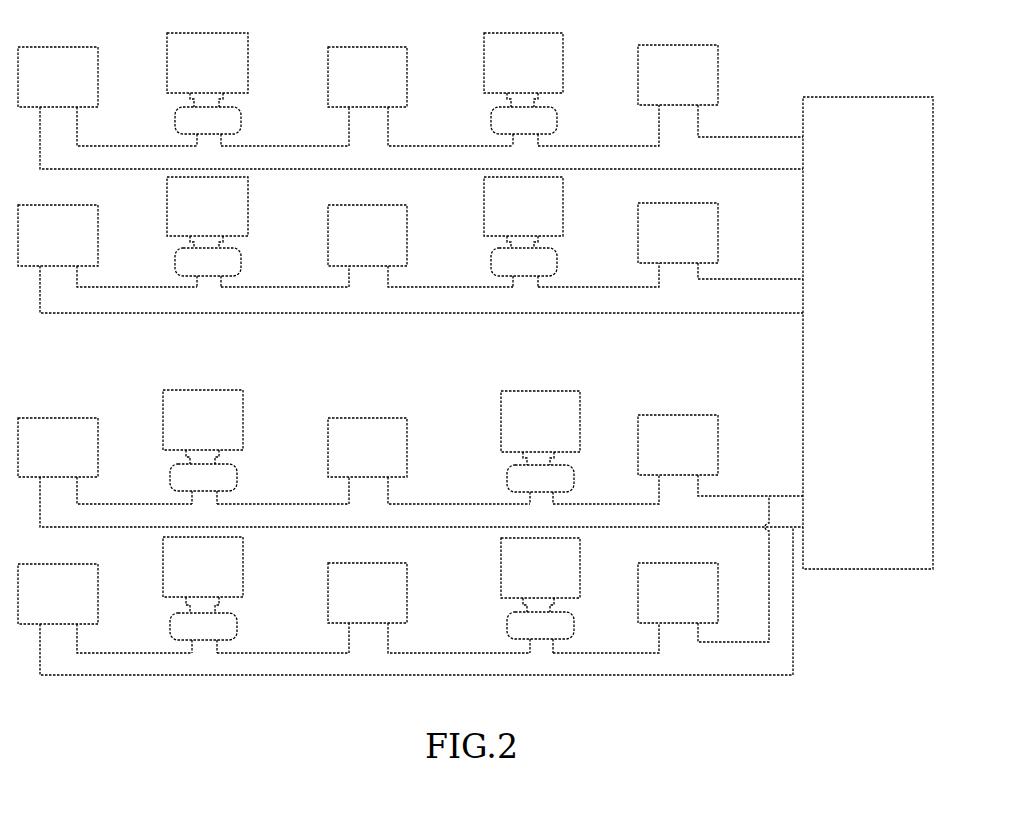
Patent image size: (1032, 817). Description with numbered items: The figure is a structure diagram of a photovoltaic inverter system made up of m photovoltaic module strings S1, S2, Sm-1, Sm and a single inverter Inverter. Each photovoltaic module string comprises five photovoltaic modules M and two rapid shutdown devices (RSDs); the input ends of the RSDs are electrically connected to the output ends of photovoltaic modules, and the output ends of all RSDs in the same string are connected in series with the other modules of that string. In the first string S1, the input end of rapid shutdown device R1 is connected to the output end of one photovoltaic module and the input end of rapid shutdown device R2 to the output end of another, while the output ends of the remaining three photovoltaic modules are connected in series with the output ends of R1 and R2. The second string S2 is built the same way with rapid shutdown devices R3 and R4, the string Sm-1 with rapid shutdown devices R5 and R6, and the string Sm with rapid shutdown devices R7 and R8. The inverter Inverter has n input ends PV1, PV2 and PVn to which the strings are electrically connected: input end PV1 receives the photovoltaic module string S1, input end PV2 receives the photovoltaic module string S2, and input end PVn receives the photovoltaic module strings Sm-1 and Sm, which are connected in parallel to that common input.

The rapid shutdown device R1 is at (208, 119).
The rapid shutdown device R2 is at (524, 119).
The rapid shutdown device R3 is at (208, 261).
The rapid shutdown device R4 is at (524, 261).
The rapid shutdown device R5 is at (203, 477).
The rapid shutdown device R6 is at (540, 478).
The rapid shutdown device R7 is at (203, 625).
The rapid shutdown device R8 is at (540, 625).
The photovoltaic module string S1 is at (410, 101).
The photovoltaic module string S2 is at (410, 245).
The photovoltaic module string Sm-1 is at (410, 458).
The photovoltaic module string Sm is at (405, 585).
The input end of the inverter PV1 is at (831, 157).
The input end of the inverter PV2 is at (831, 298).
The input end of the inverter PVn is at (831, 513).
The inverter Inverter is at (868, 333).